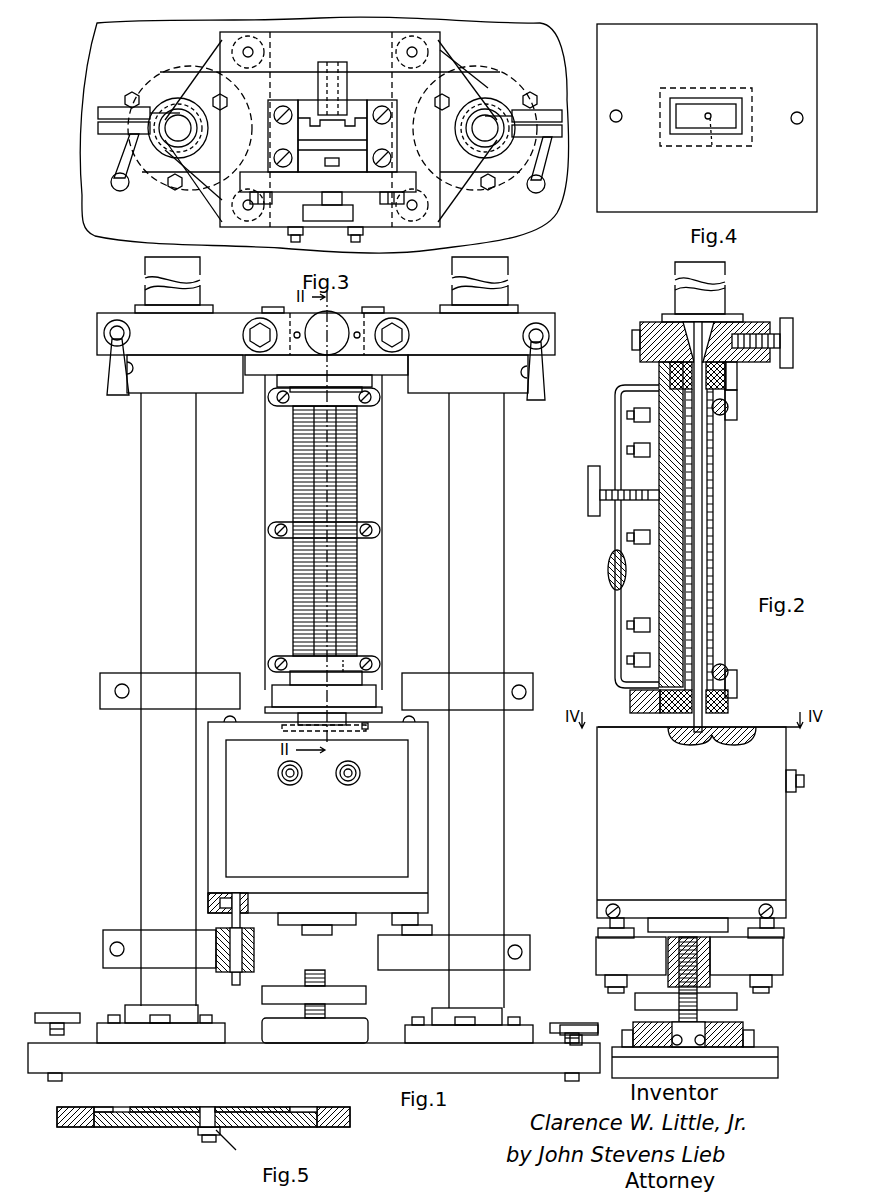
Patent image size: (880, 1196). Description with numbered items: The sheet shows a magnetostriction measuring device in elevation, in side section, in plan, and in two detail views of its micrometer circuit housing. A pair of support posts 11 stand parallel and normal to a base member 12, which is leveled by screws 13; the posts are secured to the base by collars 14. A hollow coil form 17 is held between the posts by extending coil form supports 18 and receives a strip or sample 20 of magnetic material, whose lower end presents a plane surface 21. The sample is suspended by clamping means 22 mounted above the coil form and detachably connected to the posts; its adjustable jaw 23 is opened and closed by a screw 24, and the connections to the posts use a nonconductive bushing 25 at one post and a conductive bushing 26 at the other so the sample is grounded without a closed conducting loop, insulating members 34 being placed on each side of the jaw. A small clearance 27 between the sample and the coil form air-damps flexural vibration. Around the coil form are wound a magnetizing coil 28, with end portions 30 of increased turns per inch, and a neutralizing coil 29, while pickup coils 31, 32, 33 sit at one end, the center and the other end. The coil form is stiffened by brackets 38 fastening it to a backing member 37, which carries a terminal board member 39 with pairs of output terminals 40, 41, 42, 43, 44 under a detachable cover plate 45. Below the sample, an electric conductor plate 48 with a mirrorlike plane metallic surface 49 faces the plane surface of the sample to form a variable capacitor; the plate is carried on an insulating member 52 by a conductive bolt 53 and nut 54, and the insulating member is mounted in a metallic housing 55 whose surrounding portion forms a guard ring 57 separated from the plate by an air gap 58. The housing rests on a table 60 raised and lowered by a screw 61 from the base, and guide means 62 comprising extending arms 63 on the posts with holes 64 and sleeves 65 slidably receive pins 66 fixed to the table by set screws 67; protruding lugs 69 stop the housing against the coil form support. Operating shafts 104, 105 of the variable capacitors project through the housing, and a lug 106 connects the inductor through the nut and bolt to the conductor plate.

In FIG. 3, the support posts 11 is at (186, 135).
In FIG. 1, the support posts 11 is at (141, 485).
In FIG. 2, the support posts 11 is at (725, 286).
In FIG. 1, the base member 12 is at (348, 1073).
In FIG. 2, the base member 12 is at (778, 1070).
In FIG. 1, the screws 13 is at (48, 1013).
In FIG. 2, the screws 13 is at (570, 1025).
In FIG. 3, the collars 14 is at (145, 80).
In FIG. 1, the collars 14 is at (100, 1023).
In FIG. 2, the collars 14 is at (754, 1036).
In FIG. 1, the coil form 17 is at (357, 564).
In FIG. 2, the coil form 17 is at (714, 462).
In FIG. 1, the coil form supports 18 is at (120, 673).
In FIG. 2, the coil form supports 18 is at (737, 396).
In FIG. 3, the strip or sample 20 is at (342, 120).
In FIG. 1, the strip or sample 20 is at (348, 668).
In FIG. 2, the strip or sample 20 is at (705, 502).
In FIG. 1, the plane surface 21 is at (346, 712).
In FIG. 2, the plane surface 21 is at (630, 713).
In FIG. 3, the clamping means 22 is at (292, 72).
In FIG. 1, the clamping means 22 is at (222, 316).
In FIG. 2, the clamping means 22 is at (640, 330).
In FIG. 3, the adjustable jaw 23 is at (300, 135).
In FIG. 2, the adjustable jaw 23 is at (710, 322).
In FIG. 3, the screw 24 is at (326, 222).
In FIG. 1, the screw 24 is at (340, 318).
In FIG. 2, the screw 24 is at (793, 340).
In FIG. 3, the nonconductive bushing 25 is at (150, 170).
In FIG. 1, the nonconductive bushing 25 is at (120, 313).
In FIG. 3, the conductive bushing 26 is at (497, 96).
In FIG. 1, the conductive bushing 26 is at (530, 313).
In FIG. 2, the conductive bushing 26 is at (665, 316).
In FIG. 2, the clearance 27 is at (700, 572).
In FIG. 1, the magnetizing coil 28 is at (357, 486).
In FIG. 2, the magnetizing coil 28 is at (706, 592).
In FIG. 1, the neutralizing coil 29 is at (357, 478).
In FIG. 2, the neutralizing coil 29 is at (710, 610).
In FIG. 1, the end portions 30 is at (280, 378).
In FIG. 2, the end portions 30 is at (726, 378).
In FIG. 1, the pickup coil 31 is at (357, 420).
In FIG. 2, the pickup coil 31 is at (716, 436).
In FIG. 1, the pickup coil 32 is at (357, 520).
In FIG. 2, the pickup coil 32 is at (716, 518).
In FIG. 1, the pickup coil 33 is at (357, 644).
In FIG. 2, the pickup coil 33 is at (714, 630).
In FIG. 3, the insulating members 34 is at (398, 178).
In FIG. 1, the insulating members 34 is at (290, 318).
In FIG. 1, the backing member 37 is at (265, 562).
In FIG. 2, the backing member 37 is at (660, 550).
In FIG. 1, the brackets 38 is at (270, 404).
In FIG. 2, the brackets 38 is at (729, 410).
In FIG. 2, the terminal board member 39 is at (626, 576).
In FIG. 2, the output terminals 40 is at (632, 408).
In FIG. 2, the output terminals 41 is at (634, 418).
In FIG. 2, the output terminals 42 is at (634, 450).
In FIG. 2, the output terminals 43 is at (634, 537).
In FIG. 2, the output terminals 44 is at (634, 625).
In FIG. 2, the cover plate 45 is at (606, 580).
In FIG. 4, the electric conductor plate 48 is at (688, 104).
In FIG. 1, the electric conductor plate 48 is at (337, 731).
In FIG. 2, the electric conductor plate 48 is at (735, 730).
In FIG. 5, the electric conductor plate 48 is at (276, 1100).
In FIG. 5, the plane metallic surface 49 is at (168, 1107).
In FIG. 4, the insulating member 52 is at (665, 142).
In FIG. 1, the insulating member 52 is at (366, 731).
In FIG. 2, the insulating member 52 is at (668, 738).
In FIG. 5, the insulating member 52 is at (135, 1127).
In FIG. 4, the conductive bolt 53 is at (712, 146).
In FIG. 2, the conductive bolt 53 is at (692, 740).
In FIG. 5, the conductive bolt 53 is at (210, 1110).
In FIG. 5, the nut 54 is at (200, 1137).
In FIG. 3, the housing 55 is at (442, 215).
In FIG. 4, the housing 55 is at (597, 40).
In FIG. 1, the housing 55 is at (428, 796).
In FIG. 2, the housing 55 is at (597, 822).
In FIG. 5, the housing 55 is at (350, 1120).
In FIG. 4, the guard ring 57 is at (612, 202).
In FIG. 5, the guard ring 57 is at (72, 1107).
In FIG. 4, the air gap 58 is at (735, 98).
In FIG. 5, the air gap 58 is at (116, 1107).
In FIG. 1, the table 60 is at (428, 900).
In FIG. 2, the table 60 is at (597, 904).
In FIG. 1, the screw 61 is at (345, 990).
In FIG. 2, the screw 61 is at (737, 1001).
In FIG. 1, the guide means 62 is at (168, 990).
In FIG. 2, the guide means 62 is at (783, 962).
In FIG. 3, the extending arms 63 is at (450, 62).
In FIG. 1, the extending arms 63 is at (103, 955).
In FIG. 2, the extending arms 63 is at (596, 962).
In FIG. 3, the holes 64 is at (222, 42).
In FIG. 1, the holes 64 is at (236, 986).
In FIG. 1, the sleeves 65 is at (254, 950).
In FIG. 2, the sleeves 65 is at (598, 934).
In FIG. 1, the pins 66 is at (254, 935).
In FIG. 2, the pins 66 is at (610, 923).
In FIG. 1, the set screws 67 is at (208, 903).
In FIG. 2, the set screws 67 is at (614, 904).
In FIG. 4, the protruding lugs 69 is at (618, 110).
In FIG. 1, the protruding lugs 69 is at (222, 716).
In FIG. 3, the operating shaft 104 is at (295, 242).
In FIG. 1, the operating shaft 104 is at (285, 782).
In FIG. 3, the operating shaft 105 is at (356, 242).
In FIG. 1, the operating shaft 105 is at (352, 782).
In FIG. 2, the operating shaft 105 is at (804, 780).
In FIG. 5, the lug 106 is at (234, 1152).